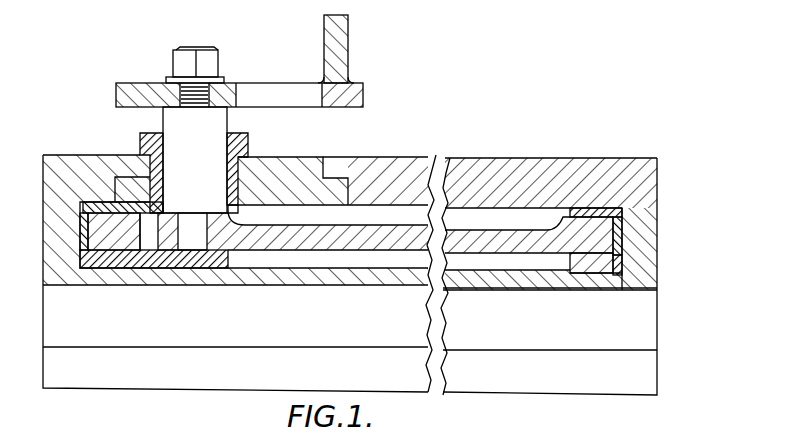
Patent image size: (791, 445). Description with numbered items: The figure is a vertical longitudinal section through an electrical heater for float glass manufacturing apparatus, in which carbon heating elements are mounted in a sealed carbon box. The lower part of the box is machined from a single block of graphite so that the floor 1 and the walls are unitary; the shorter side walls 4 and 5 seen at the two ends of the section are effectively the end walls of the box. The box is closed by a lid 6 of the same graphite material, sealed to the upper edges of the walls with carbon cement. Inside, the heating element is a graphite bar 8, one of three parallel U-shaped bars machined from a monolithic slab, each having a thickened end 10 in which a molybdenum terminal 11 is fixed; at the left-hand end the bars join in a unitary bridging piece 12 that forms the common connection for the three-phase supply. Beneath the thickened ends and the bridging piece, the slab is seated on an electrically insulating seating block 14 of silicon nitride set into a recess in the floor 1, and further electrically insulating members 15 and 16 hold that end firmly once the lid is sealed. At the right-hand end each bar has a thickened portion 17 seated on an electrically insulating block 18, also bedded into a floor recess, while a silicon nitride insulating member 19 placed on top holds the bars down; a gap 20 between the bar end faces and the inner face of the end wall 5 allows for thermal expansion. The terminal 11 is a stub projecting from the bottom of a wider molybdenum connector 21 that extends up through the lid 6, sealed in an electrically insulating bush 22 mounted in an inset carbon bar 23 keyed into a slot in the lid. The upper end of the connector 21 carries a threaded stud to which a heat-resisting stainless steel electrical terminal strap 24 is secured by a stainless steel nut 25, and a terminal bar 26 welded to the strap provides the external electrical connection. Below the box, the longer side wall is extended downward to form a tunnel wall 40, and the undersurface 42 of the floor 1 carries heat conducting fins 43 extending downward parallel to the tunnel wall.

The floor 1 is at (480, 277).
The shorter side wall 4 is at (63, 260).
The shorter side wall 5 is at (647, 255).
The lid 6 is at (553, 166).
The graphite bar 8 is at (453, 243).
The thickened end 10 is at (167, 242).
The molybdenum terminal 11 is at (193, 243).
The bridging piece 12 is at (118, 233).
The electrically insulating seating block 14 is at (177, 263).
The electrically insulating member 15 is at (80, 233).
The electrically insulating member 16 is at (83, 207).
The thickened portion 17 is at (615, 242).
The electrically insulating block 18 is at (583, 262).
The silicon nitride insulating member 19 is at (600, 208).
The gap 20 is at (615, 267).
The molybdenum connector 21 is at (218, 127).
The electrically insulating bush 22 is at (243, 145).
The inset carbon bar 23 is at (302, 167).
The electrical terminal strap 24 is at (150, 90).
The stainless steel nut 25 is at (212, 65).
The terminal bar 26 is at (343, 49).
The tunnel wall 40 is at (640, 377).
The undersurface 42 is at (508, 278).
The heat conducting fins 43 is at (640, 345).